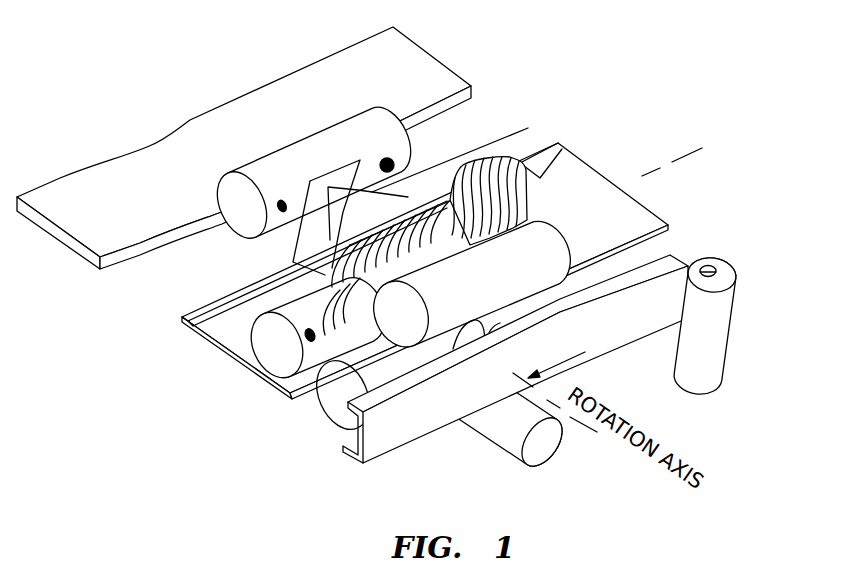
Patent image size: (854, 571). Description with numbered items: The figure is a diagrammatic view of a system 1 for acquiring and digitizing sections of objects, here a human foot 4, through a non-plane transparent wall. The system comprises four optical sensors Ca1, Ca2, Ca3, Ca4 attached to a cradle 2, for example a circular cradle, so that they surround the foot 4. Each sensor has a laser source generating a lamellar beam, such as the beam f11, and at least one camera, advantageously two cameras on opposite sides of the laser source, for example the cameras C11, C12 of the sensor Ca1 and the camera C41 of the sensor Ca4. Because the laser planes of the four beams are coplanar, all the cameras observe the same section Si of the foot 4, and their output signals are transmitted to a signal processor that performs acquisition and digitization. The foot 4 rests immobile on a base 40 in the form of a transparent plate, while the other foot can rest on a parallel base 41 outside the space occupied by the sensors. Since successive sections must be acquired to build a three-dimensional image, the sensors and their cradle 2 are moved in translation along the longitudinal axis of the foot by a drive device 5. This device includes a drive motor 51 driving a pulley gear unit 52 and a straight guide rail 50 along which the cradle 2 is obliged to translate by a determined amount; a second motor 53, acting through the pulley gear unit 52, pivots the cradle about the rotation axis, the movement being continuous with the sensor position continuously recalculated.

The system 1 is at (616, 105).
The cradle 2 is at (296, 247).
The foot 4 is at (563, 150).
The drive device 5 is at (762, 340).
The base 40 is at (616, 201).
The base 41 is at (424, 73).
The straight guide rail 50 is at (390, 434).
The drive motor 51 is at (701, 380).
The pulley gear unit 52 is at (518, 318).
The second motor 53 is at (476, 447).
The optical sensor Ca1 is at (297, 152).
The optical sensor Ca2 is at (548, 240).
The optical sensor Ca3 is at (327, 418).
The optical sensor Ca4 is at (271, 352).
The camera C11 is at (279, 212).
The camera C12 is at (392, 163).
The camera C41 is at (310, 340).
The lamellar beam f11 is at (463, 154).
The section Si is at (183, 325).